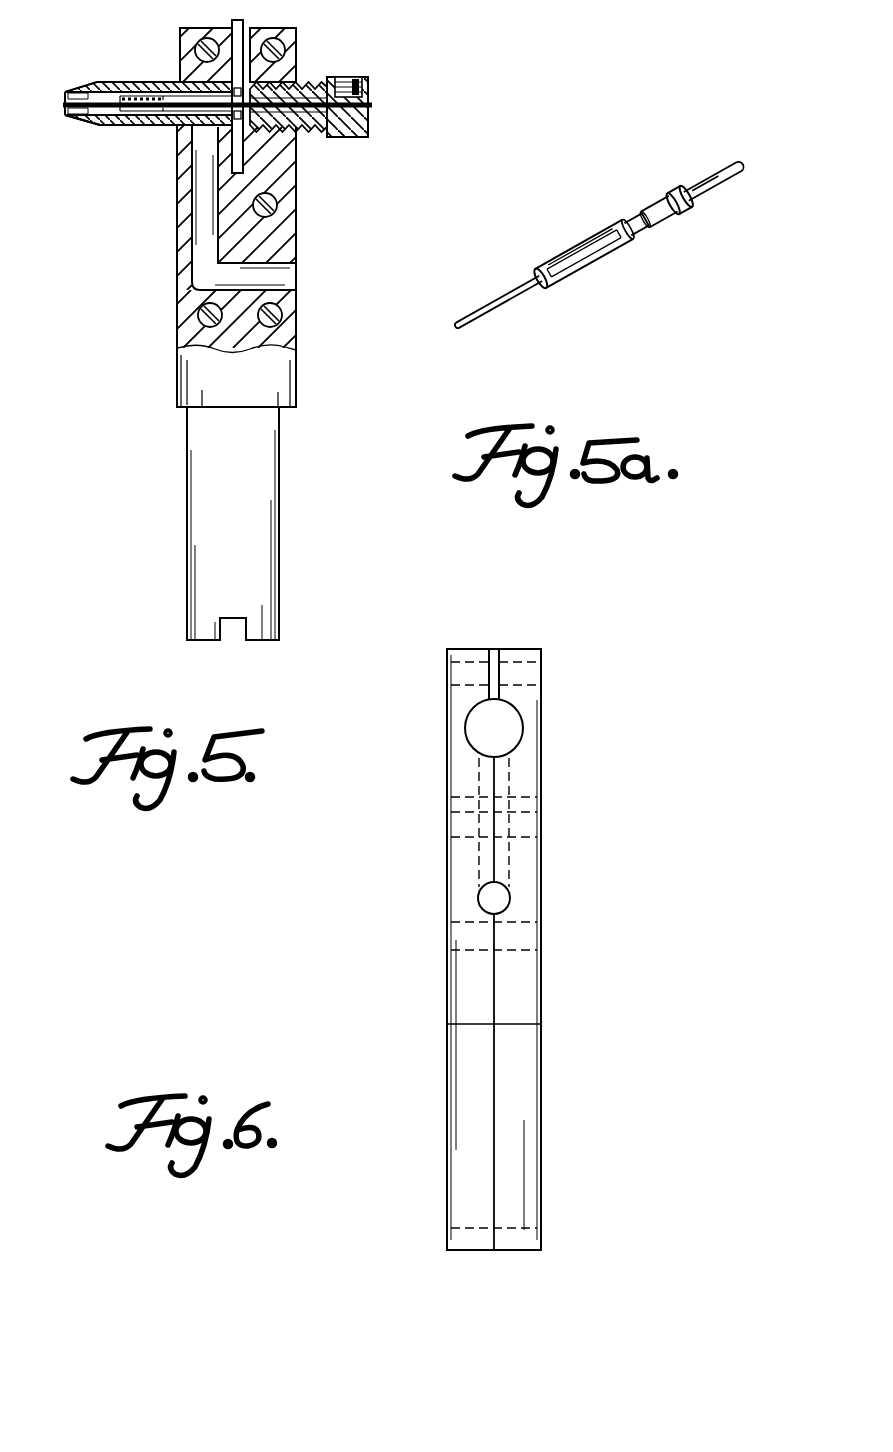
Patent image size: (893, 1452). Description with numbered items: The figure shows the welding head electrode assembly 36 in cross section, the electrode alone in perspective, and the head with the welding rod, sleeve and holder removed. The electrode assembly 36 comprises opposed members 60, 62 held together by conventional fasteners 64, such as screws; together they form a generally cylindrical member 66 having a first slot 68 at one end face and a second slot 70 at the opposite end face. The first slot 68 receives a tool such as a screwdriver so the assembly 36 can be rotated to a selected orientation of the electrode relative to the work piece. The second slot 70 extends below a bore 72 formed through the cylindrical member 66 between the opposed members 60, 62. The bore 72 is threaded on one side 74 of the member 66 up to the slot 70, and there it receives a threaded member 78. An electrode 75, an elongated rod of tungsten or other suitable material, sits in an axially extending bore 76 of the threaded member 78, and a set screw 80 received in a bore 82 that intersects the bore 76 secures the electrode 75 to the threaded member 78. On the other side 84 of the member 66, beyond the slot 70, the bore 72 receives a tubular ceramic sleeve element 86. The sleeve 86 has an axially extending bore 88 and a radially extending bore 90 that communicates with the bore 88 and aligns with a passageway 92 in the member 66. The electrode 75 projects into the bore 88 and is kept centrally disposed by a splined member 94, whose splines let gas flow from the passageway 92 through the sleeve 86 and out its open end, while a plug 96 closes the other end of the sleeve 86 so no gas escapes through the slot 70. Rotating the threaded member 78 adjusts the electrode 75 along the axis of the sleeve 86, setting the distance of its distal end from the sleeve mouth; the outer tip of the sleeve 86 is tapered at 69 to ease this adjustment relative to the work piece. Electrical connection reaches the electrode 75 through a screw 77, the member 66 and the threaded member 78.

In FIG. 5, the electrode assembly 36 is at (308, 277).
In FIG. 6, the opposed member 60 is at (461, 857).
In FIG. 6, the opposed member 62 is at (531, 884).
In FIG. 5, the fasteners 64 is at (206, 38).
In FIG. 5, the cylindrical member 66 is at (128, 125).
In FIG. 6, the cylindrical member 66 is at (440, 883).
In FIG. 5, the first slot 68 is at (240, 638).
In FIG. 6, the first slot 68 is at (520, 1230).
In FIG. 5, the tapered tip portion 69 is at (88, 125).
In FIG. 5, the second slot 70 is at (248, 45).
In FIG. 6, the second slot 70 is at (531, 837).
In FIG. 6, the bore 72 is at (514, 728).
In FIG. 5, the side of member 74 is at (293, 76).
In FIG. 5, the electrode 75 is at (65, 110).
In FIG. 5A, the electrode 75 is at (728, 168).
In FIG. 5, the axially extending bore 76 is at (313, 112).
In FIG. 5, the screw 77 is at (277, 204).
In FIG. 5, the threaded member 78 is at (370, 124).
In FIG. 5, the set screw 80 is at (357, 77).
In FIG. 5, the bore 82 is at (362, 98).
In FIG. 5, the side of member 84 is at (180, 50).
In FIG. 5, the tubular ceramic sleeve element 86 is at (163, 80).
In FIG. 5, the axially extending bore 88 is at (75, 90).
In FIG. 5, the radially extending bore 90 is at (199, 128).
In FIG. 5, the passageway 92 is at (287, 266).
In FIG. 5, the splined member 94 is at (123, 92).
In FIG. 5A, the splined member 94 is at (596, 212).
In FIG. 5, the plug 96 is at (237, 86).
In FIG. 5A, the plug 96 is at (681, 186).